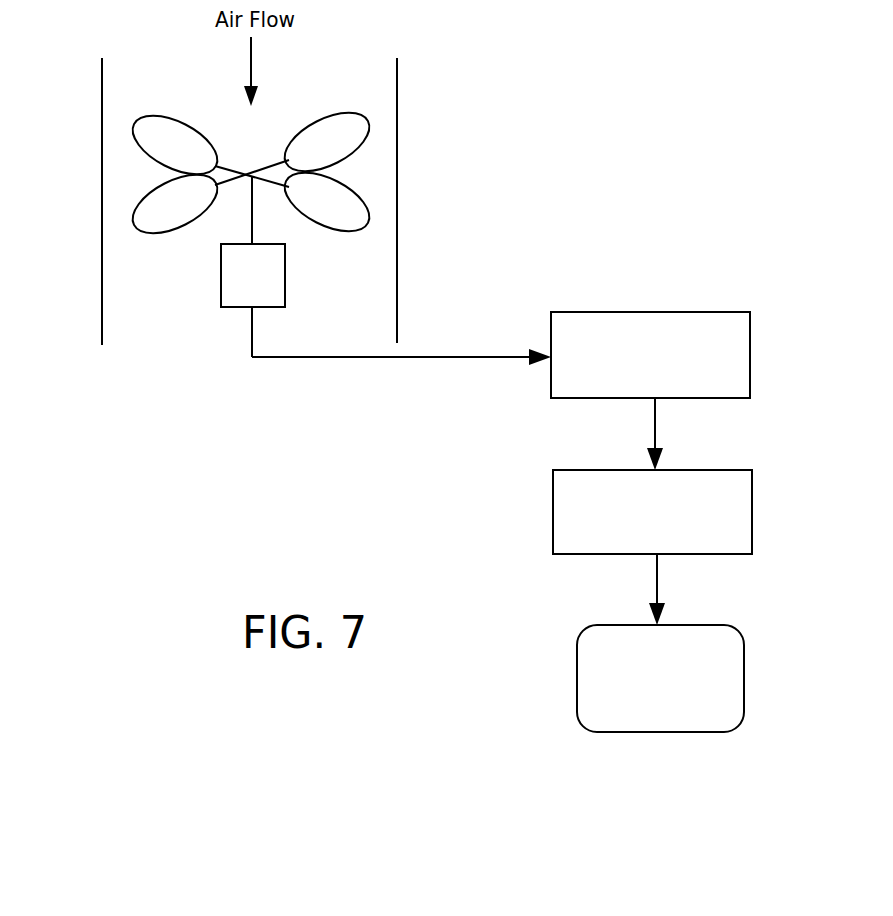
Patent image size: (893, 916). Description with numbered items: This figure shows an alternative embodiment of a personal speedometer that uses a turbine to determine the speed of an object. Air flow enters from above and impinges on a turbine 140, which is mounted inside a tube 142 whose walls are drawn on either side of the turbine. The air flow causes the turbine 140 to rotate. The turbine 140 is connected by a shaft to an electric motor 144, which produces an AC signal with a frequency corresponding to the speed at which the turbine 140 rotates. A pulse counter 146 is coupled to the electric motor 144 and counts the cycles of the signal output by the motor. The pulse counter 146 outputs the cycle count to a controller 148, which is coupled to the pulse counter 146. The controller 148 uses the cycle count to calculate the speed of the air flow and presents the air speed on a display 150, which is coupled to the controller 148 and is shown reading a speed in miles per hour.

The turbine 140 is at (134, 167).
The tube 142 is at (102, 289).
The electric motor 144 is at (221, 280).
The pulse counter 146 is at (720, 318).
The controller 148 is at (720, 476).
The display 150 is at (725, 643).